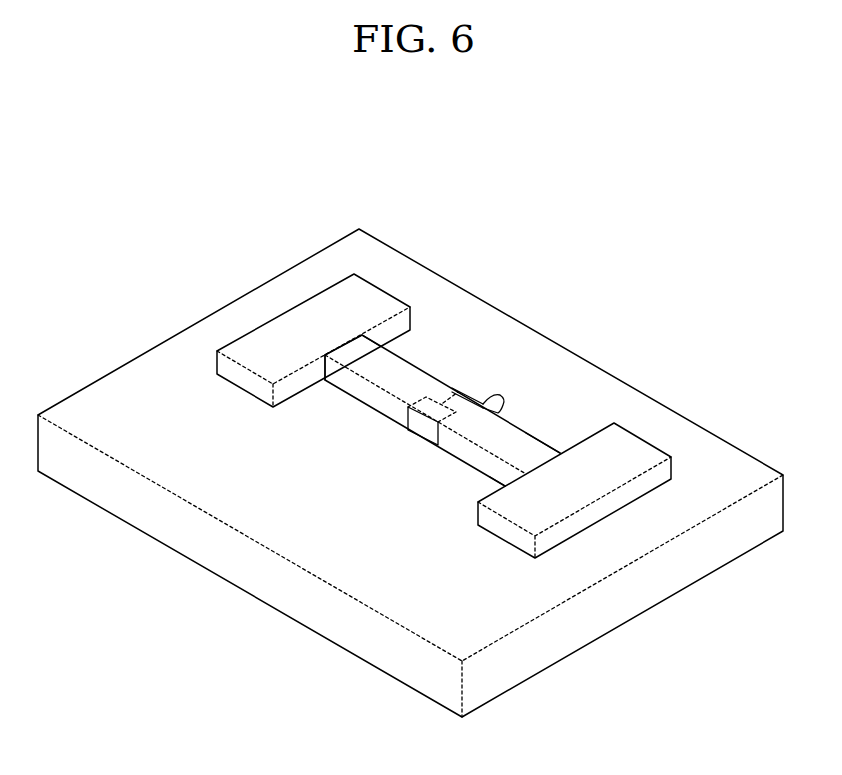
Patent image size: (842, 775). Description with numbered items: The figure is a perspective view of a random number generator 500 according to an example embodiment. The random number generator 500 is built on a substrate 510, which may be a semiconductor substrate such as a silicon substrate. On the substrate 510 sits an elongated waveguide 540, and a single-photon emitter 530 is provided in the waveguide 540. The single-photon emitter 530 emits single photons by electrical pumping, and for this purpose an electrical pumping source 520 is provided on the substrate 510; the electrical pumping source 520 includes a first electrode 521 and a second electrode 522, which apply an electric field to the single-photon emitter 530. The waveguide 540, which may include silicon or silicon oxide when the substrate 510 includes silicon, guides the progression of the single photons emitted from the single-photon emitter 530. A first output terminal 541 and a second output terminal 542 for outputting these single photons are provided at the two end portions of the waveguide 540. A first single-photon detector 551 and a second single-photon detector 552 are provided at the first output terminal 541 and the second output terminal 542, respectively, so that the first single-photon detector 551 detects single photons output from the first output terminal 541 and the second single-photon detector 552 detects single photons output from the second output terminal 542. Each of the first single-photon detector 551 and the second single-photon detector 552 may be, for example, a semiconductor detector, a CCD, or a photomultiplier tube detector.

The random number generator 500 is at (669, 268).
The substrate 510 is at (618, 618).
The electrical pumping source 520 is at (348, 510).
The first electrode 521 is at (412, 432).
The second electrode 522 is at (498, 413).
The single-photon emitter 530 is at (447, 407).
The waveguide 540 is at (513, 437).
The first output terminal 541 is at (343, 348).
The second output terminal 542 is at (560, 453).
The first single-photon detector 551 is at (378, 293).
The second single-photon detector 552 is at (638, 443).